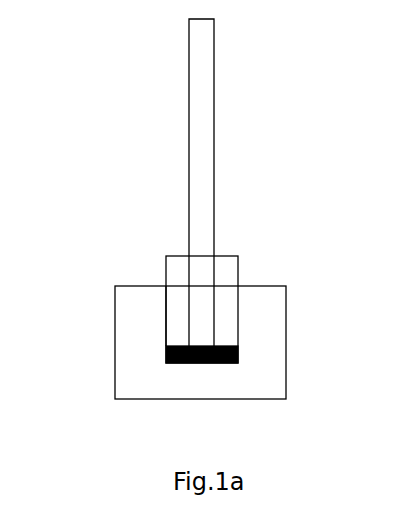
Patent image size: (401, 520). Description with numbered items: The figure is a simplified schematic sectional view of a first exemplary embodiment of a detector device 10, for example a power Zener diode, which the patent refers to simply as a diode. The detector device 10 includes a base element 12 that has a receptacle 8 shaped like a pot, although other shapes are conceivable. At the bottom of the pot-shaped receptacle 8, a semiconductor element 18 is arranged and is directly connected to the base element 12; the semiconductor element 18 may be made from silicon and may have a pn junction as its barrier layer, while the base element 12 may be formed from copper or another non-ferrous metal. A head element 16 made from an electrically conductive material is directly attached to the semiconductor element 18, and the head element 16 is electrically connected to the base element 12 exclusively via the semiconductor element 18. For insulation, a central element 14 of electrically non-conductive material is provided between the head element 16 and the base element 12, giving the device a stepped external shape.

The detector device 10 is at (95, 107).
The base element 12 is at (260, 326).
The central element 14 is at (225, 280).
The head element 16 is at (200, 125).
The semiconductor element 18 is at (238, 354).
The receptacle 8 is at (166, 315).